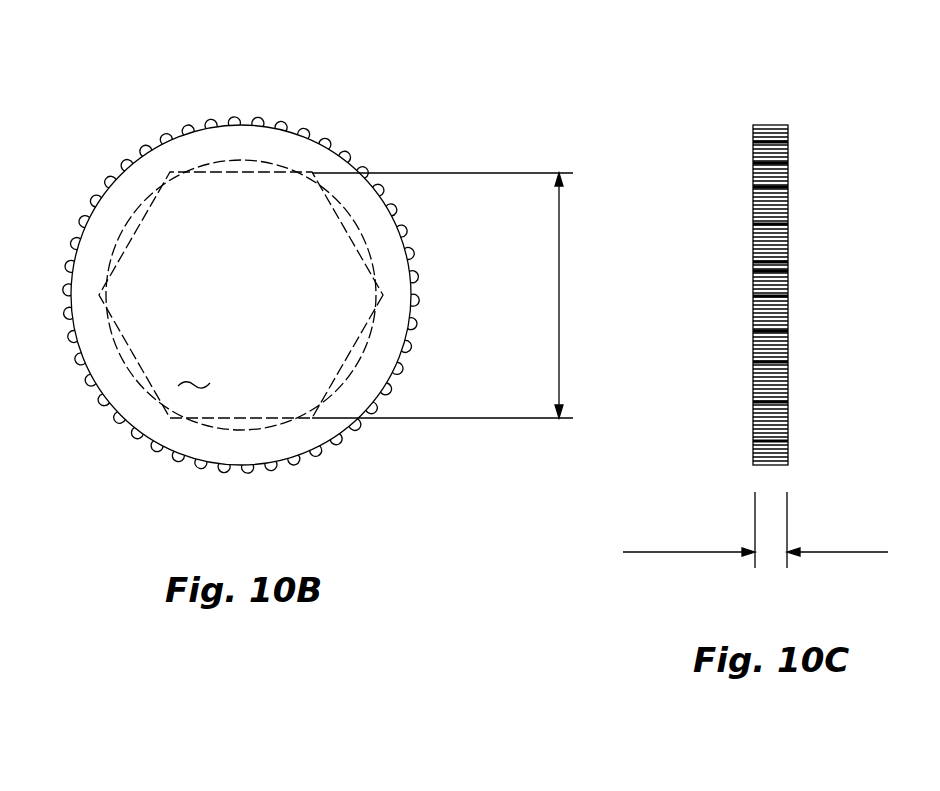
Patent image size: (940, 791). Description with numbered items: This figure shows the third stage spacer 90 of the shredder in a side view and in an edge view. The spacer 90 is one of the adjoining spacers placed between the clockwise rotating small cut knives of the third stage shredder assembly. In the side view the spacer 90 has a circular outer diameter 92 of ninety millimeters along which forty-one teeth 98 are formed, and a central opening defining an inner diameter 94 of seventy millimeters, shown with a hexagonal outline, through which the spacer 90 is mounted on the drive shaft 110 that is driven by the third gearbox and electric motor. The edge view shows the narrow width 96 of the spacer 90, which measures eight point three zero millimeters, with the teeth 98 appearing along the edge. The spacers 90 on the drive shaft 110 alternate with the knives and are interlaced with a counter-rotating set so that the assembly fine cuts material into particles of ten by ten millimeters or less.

In FIG. 10B, the spacer 90 is at (448, 153).
In FIG. 10C, the spacer 90 is at (815, 192).
In FIG. 10B, the outer diameter 92 is at (308, 140).
In FIG. 10B, the inner diameter 94 is at (559, 283).
In FIG. 10C, the width 96 is at (736, 530).
In FIG. 10B, the teeth 98 is at (235, 128).
In FIG. 10C, the teeth 98 is at (776, 122).
In FIG. 10B, the drive shaft 110 is at (190, 383).